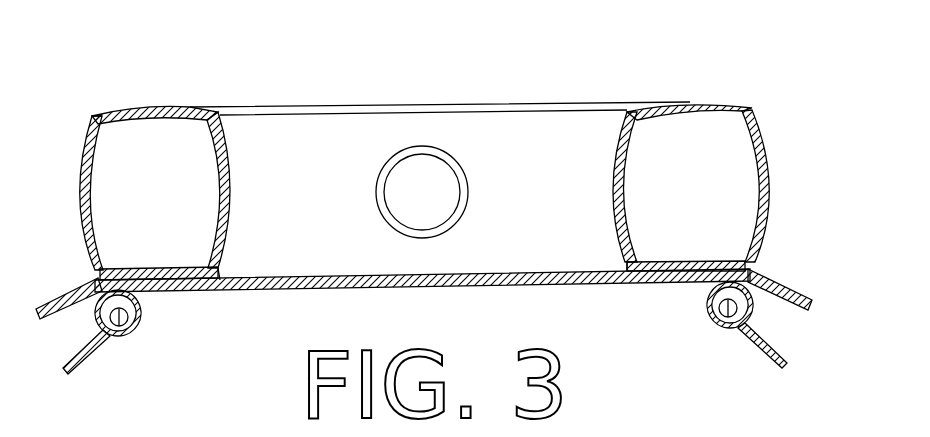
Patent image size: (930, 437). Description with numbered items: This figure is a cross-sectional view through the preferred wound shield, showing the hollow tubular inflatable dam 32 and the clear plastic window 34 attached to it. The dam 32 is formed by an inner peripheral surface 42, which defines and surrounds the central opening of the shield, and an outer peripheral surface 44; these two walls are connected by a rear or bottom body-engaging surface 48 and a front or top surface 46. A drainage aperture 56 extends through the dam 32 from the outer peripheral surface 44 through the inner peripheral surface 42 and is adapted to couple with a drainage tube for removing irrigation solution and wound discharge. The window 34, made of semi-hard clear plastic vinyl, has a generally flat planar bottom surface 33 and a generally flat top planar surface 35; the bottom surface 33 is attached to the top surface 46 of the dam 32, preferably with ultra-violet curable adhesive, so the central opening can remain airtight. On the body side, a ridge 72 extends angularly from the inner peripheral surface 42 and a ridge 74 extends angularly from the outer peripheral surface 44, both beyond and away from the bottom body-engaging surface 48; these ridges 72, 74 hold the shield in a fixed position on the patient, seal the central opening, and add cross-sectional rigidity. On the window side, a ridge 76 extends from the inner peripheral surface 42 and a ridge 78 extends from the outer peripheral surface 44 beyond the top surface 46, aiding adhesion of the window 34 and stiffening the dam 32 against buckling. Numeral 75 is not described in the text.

The inflatable dam 32 is at (720, 168).
The bottom surface 33 is at (477, 270).
The window 34 is at (268, 290).
The top planar surface 35 is at (627, 285).
The inner peripheral surface 42 is at (322, 169).
The outer peripheral surface 44 is at (78, 198).
The top surface 46 is at (170, 223).
The bottom body-engaging surface 48 is at (167, 70).
The drainage aperture 56 is at (408, 208).
The ridge 72 is at (218, 115).
The ridge 74 is at (95, 112).
The flange 75 is at (87, 272).
The ridge 76 is at (220, 266).
The ridge 78 is at (757, 268).